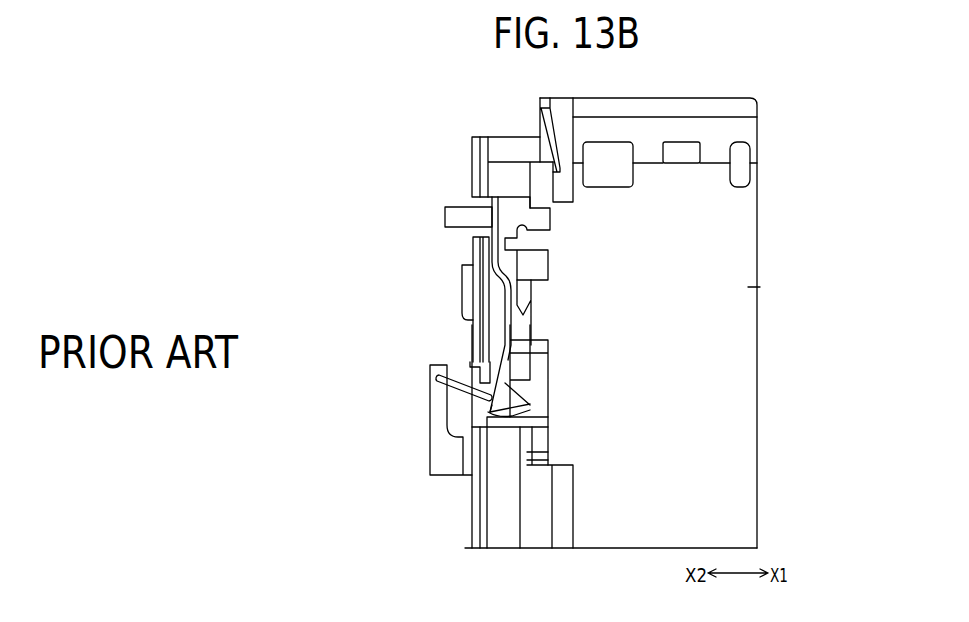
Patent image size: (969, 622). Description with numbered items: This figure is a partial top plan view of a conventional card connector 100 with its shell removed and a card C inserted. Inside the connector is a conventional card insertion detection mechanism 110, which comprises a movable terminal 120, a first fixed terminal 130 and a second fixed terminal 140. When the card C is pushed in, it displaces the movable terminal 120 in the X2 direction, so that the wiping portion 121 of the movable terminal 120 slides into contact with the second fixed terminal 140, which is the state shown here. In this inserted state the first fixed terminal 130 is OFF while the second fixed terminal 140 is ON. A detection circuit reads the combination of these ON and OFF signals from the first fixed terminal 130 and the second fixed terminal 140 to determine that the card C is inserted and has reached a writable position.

The card connector 100 is at (718, 82).
The card insertion detection mechanism 110 is at (548, 390).
The movable terminal 120 is at (532, 372).
The wiping portion 121 is at (463, 385).
The first fixed terminal 130 is at (470, 405).
The second fixed terminal 140 is at (436, 383).
The card C is at (760, 285).